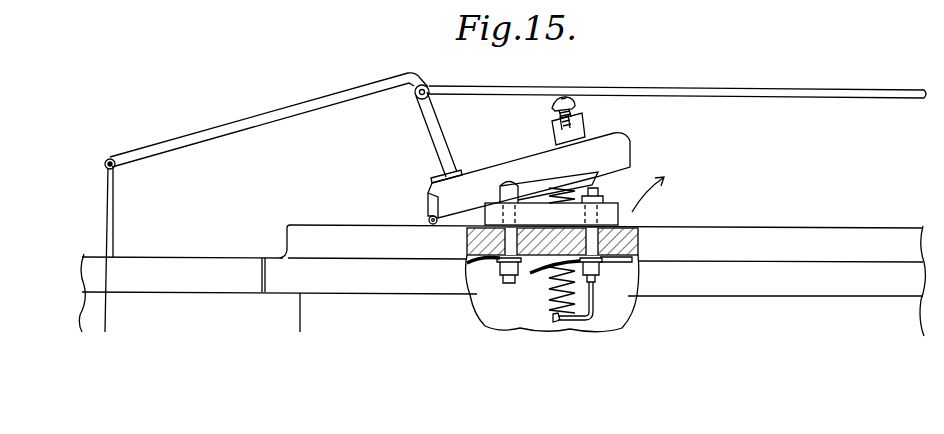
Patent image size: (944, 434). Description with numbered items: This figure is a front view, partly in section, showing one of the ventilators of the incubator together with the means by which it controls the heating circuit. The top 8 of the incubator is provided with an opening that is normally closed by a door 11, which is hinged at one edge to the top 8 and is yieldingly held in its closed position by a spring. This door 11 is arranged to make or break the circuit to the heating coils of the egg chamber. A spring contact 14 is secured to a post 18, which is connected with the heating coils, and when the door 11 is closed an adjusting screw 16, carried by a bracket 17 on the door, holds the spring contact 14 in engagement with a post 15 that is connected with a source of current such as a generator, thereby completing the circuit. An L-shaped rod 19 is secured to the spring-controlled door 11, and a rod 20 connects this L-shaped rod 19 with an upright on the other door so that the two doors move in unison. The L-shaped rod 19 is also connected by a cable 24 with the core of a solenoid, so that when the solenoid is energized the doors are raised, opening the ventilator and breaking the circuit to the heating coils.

The top 8 is at (760, 226).
The door 11 is at (630, 158).
The spring contact 14 is at (574, 175).
The post 15 is at (630, 223).
The adjusting screw 16 is at (585, 128).
The bracket 17 is at (585, 120).
The post 18 is at (533, 279).
The L-shaped rod 19 is at (300, 98).
The rod 20 is at (771, 97).
The cable 24 is at (113, 226).